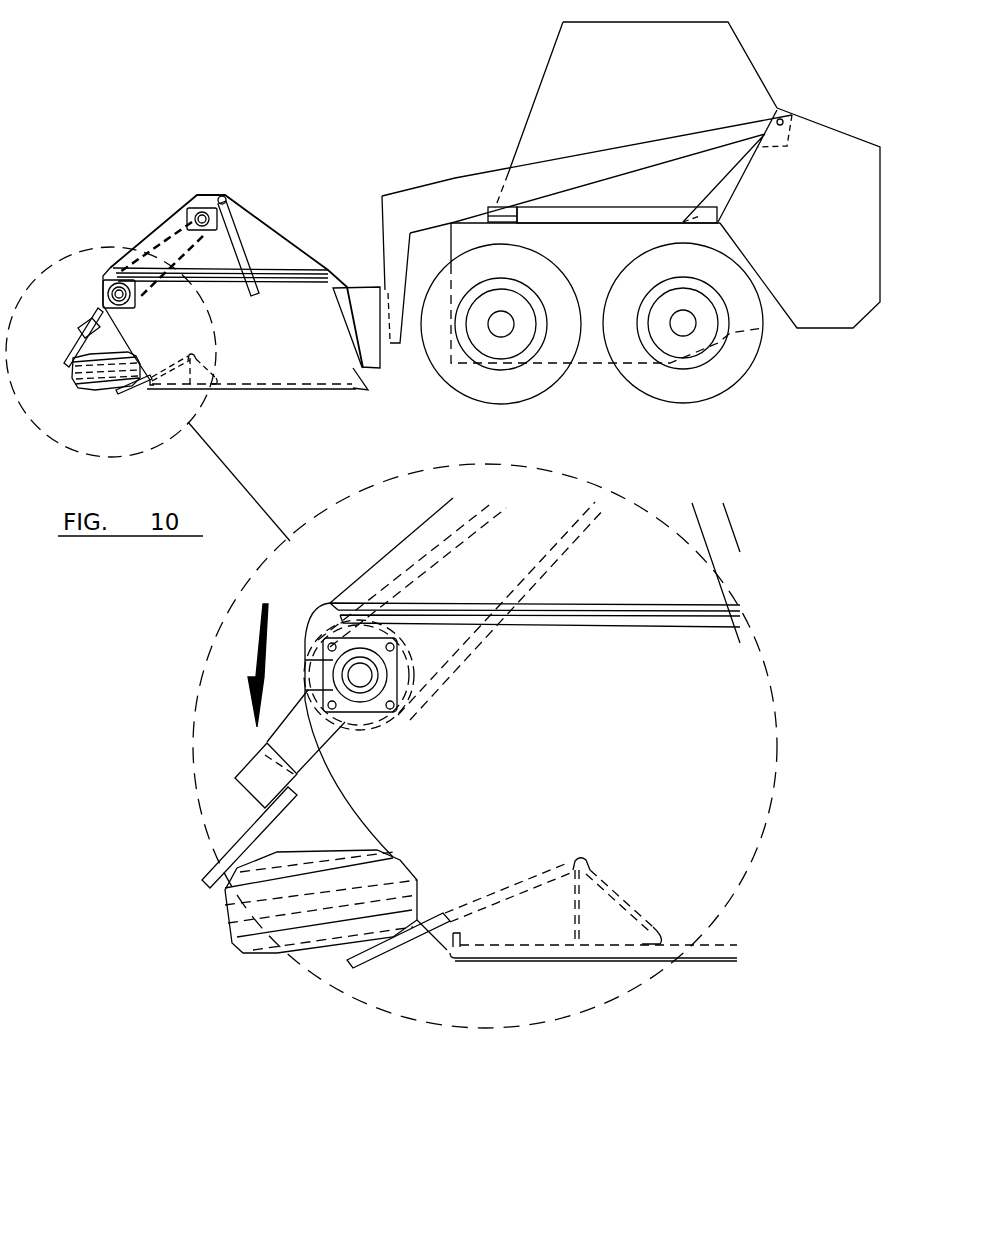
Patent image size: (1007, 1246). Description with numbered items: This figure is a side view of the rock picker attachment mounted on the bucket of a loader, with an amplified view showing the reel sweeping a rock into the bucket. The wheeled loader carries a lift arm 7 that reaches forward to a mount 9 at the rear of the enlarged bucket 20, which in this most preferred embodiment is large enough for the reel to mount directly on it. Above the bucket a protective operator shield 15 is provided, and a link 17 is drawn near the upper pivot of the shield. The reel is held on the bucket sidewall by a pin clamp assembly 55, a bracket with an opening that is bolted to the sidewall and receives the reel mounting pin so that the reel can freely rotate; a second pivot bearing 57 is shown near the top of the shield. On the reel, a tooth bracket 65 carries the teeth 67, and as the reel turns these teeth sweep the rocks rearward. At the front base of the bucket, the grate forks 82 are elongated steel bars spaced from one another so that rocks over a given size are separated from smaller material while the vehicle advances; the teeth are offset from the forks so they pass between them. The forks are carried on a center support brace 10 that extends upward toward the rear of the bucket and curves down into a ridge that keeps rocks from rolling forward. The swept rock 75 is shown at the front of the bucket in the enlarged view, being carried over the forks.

The loader lift arm 7 is at (455, 178).
The mounting plate 9 is at (357, 285).
The center support brace 10 is at (632, 902).
The protective operator shield 15 is at (257, 212).
The link rod 17 is at (222, 196).
The bucket 20 is at (277, 320).
The pin clamp assembly 55 is at (118, 278).
The pivot bearing 57 is at (200, 208).
The tooth bracket 65 is at (260, 742).
The teeth 67 is at (78, 352).
The wheel 75 is at (78, 398).
The grate forks 82 is at (120, 394).